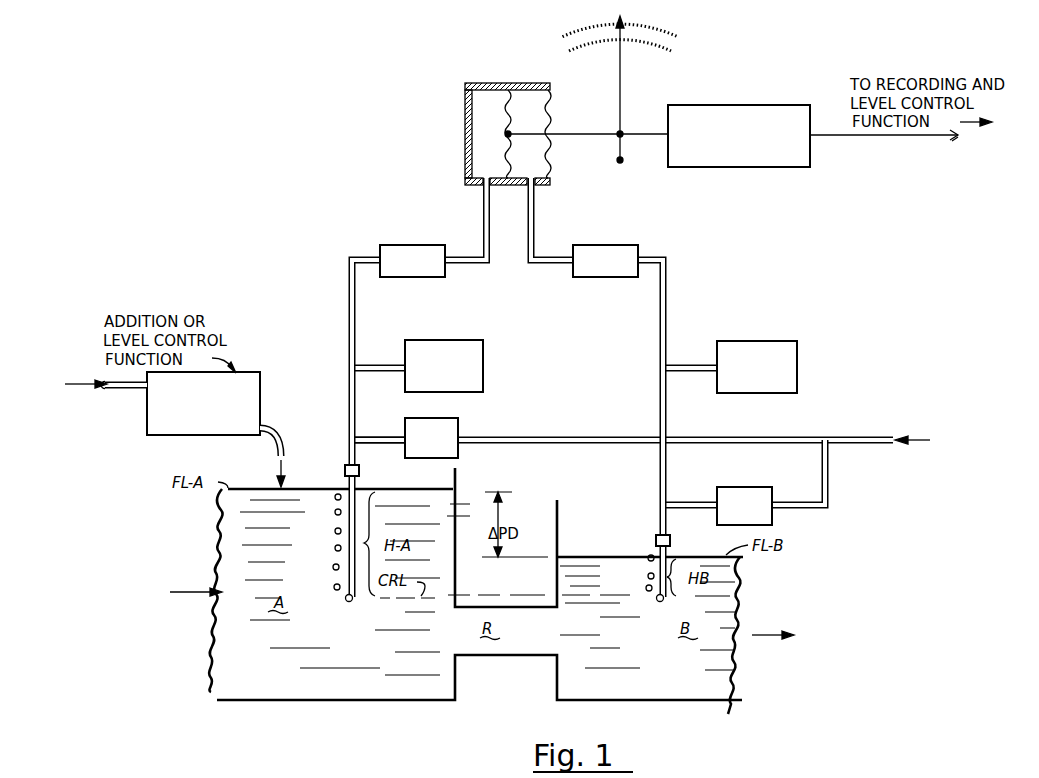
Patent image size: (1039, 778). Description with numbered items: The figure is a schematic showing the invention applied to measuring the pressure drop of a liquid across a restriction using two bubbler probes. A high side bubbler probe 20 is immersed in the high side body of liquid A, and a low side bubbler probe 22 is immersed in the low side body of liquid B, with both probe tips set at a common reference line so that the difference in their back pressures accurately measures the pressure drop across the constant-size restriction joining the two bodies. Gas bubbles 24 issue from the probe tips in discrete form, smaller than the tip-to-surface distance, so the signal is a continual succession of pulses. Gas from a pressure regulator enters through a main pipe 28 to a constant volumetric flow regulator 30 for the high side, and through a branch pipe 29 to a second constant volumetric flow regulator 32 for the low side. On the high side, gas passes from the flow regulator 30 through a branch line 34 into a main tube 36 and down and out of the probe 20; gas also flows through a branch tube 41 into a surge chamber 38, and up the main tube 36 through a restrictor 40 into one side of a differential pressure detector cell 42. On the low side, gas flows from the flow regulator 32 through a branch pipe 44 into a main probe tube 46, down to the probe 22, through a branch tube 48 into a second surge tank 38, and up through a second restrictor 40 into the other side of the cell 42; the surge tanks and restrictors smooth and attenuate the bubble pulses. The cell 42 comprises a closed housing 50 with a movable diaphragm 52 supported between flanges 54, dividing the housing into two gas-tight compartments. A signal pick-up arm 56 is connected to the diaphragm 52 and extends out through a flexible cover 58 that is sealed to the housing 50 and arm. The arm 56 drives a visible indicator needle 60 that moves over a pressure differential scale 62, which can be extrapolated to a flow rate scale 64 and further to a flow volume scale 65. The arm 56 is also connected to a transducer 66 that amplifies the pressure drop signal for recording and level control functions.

The high side bubbler probe 20 is at (334, 513).
The low side bubbler probe 22 is at (648, 560).
The bubbles 24 is at (334, 548).
The main pipe 28 is at (848, 438).
The branch pipe 29 is at (829, 467).
The constant volumetric flow regulator 30 is at (440, 447).
The constant volumetric flow regulator 32 is at (753, 516).
The branch line 34 is at (364, 435).
The main tube 36 is at (346, 462).
The surge chamber 38 is at (453, 376).
The restrictor 40 is at (420, 275).
The branch tube 41 is at (364, 362).
The differential pressure detector cell 42 is at (486, 122).
The branch pipe 44 is at (676, 499).
The main probe tube 46 is at (654, 538).
The branch tube 48 is at (676, 362).
The closed housing 50 is at (503, 86).
The movable diaphragm 52 is at (506, 134).
The flanges 54 is at (510, 93).
The signal pick-up arm 56 is at (618, 132).
The flexible cover 58 is at (549, 150).
The visible indicator needle 60 is at (619, 96).
The pressure differential scale 62 is at (568, 54).
The flow rate scale 64 is at (571, 38).
The flow volume scale 65 is at (563, 24).
The transducer 66 is at (748, 104).